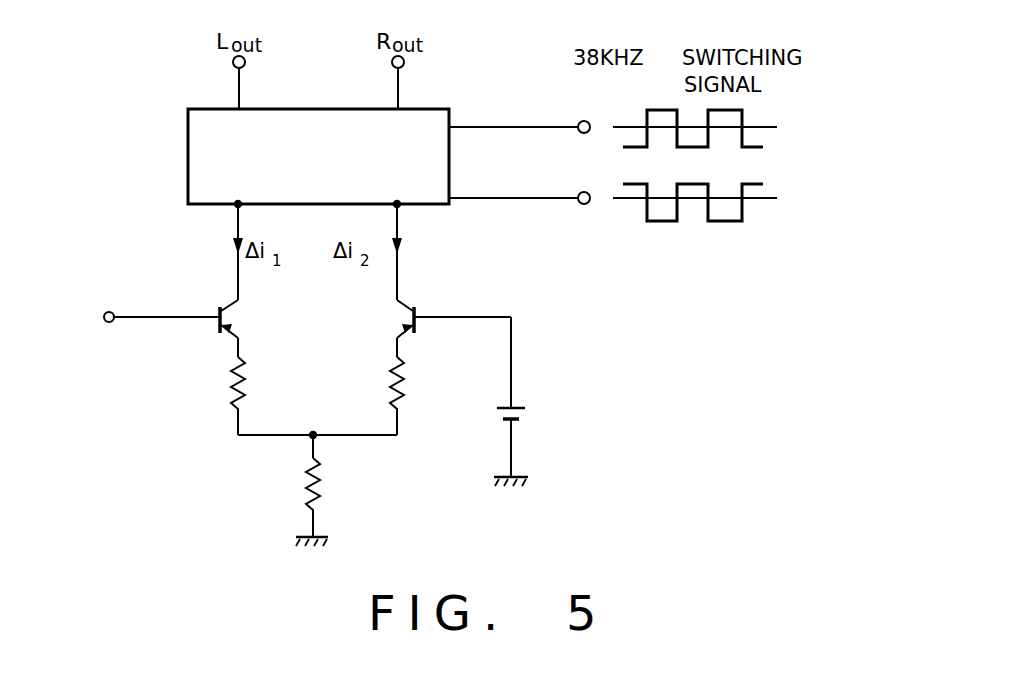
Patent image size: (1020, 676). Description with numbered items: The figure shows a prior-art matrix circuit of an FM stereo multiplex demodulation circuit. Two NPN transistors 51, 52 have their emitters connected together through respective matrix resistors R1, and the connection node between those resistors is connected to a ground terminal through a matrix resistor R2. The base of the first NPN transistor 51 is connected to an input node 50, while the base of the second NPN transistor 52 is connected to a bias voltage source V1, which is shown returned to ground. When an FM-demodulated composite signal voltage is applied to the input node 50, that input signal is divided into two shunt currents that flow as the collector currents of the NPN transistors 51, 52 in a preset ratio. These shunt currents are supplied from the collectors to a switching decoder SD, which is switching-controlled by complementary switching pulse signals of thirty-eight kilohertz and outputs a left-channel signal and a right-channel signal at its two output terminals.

The switching decoder SD is at (188, 160).
The input node 50 is at (112, 312).
The NPN transistor 51 is at (235, 319).
The NPN transistor 52 is at (402, 321).
The matrix resistor R1 is at (317, 396).
The matrix resistor R2 is at (325, 490).
The bias voltage source V1 is at (494, 401).